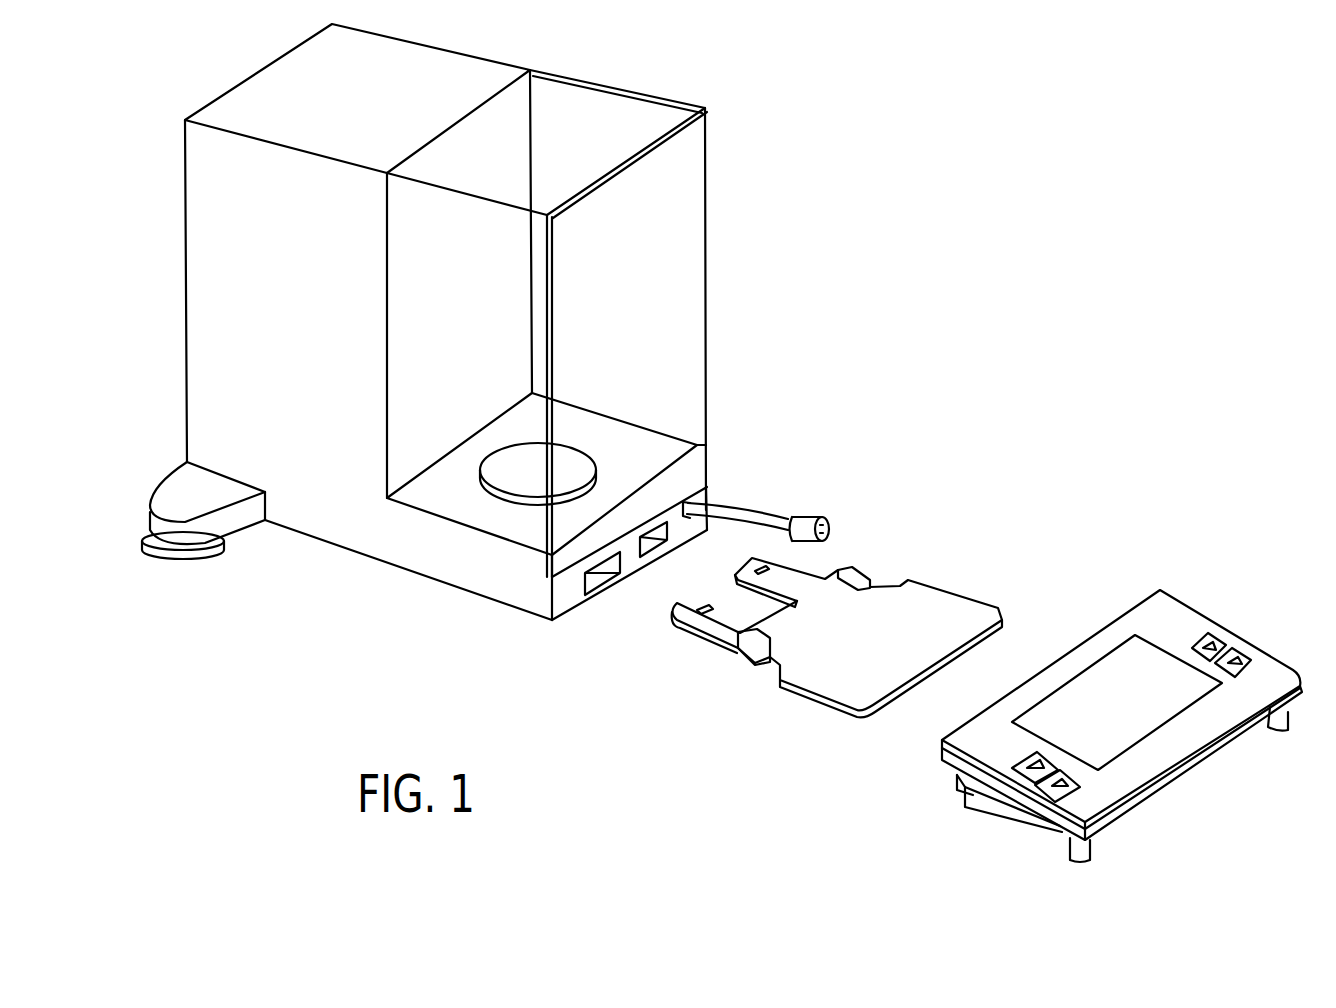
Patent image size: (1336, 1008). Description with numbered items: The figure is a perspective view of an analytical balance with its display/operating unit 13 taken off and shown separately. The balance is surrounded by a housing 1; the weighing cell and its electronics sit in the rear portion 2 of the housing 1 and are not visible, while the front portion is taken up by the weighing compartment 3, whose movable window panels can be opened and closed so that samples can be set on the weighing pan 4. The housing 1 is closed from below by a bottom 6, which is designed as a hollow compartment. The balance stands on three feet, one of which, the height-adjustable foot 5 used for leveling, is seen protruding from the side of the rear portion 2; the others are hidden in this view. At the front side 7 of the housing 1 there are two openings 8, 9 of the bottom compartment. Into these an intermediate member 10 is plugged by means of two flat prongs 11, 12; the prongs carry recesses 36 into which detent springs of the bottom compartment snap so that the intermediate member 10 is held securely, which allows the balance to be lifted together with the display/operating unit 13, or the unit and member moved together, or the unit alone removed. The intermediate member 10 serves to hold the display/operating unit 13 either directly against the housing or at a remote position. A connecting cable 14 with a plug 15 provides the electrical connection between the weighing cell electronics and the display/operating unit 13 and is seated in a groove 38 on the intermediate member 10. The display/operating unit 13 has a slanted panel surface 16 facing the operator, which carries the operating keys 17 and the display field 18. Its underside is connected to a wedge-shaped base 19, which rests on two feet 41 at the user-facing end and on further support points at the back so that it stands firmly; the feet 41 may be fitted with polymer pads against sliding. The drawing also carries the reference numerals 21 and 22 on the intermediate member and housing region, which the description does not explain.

The housing 1 is at (307, 545).
The rear portion 2 is at (210, 357).
The weighing compartment 3 is at (652, 313).
The weighing pan 4 is at (520, 462).
The foot 5 is at (198, 562).
The bottom 6 is at (387, 565).
The front side 7 is at (565, 592).
The opening 8 is at (598, 578).
The opening 9 is at (648, 541).
The intermediate member 10 is at (795, 696).
The flat prong 11 is at (713, 625).
The flat prong 12 is at (790, 578).
The display/operating unit 13 is at (1130, 602).
The connecting cable 14 is at (778, 518).
The plug 15 is at (817, 518).
The slanted panel surface 16 is at (1167, 615).
The operating keys 17 is at (1223, 635).
The display field 18 is at (1103, 677).
The wedge-shaped base 19 is at (998, 805).
The plate section 21 is at (918, 597).
The socket 22 is at (707, 497).
The recesses 36 is at (758, 571).
The groove 38 is at (852, 573).
The feet 41 is at (1100, 845).